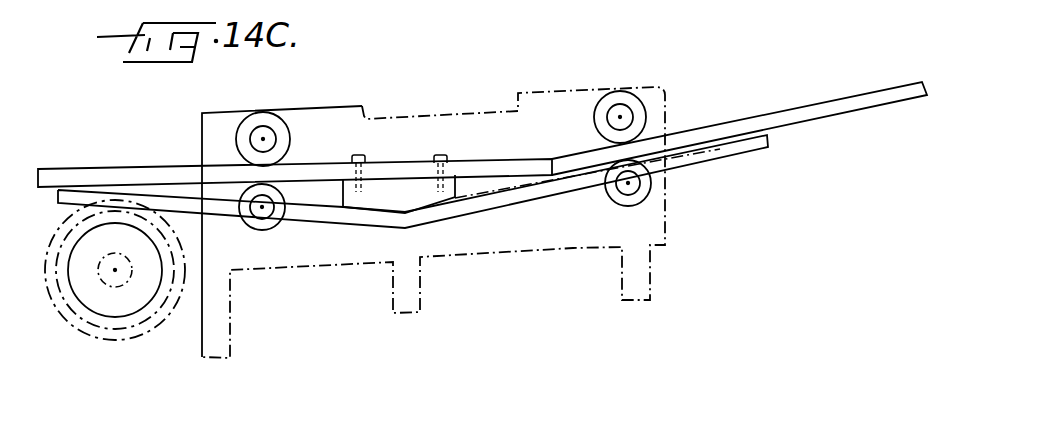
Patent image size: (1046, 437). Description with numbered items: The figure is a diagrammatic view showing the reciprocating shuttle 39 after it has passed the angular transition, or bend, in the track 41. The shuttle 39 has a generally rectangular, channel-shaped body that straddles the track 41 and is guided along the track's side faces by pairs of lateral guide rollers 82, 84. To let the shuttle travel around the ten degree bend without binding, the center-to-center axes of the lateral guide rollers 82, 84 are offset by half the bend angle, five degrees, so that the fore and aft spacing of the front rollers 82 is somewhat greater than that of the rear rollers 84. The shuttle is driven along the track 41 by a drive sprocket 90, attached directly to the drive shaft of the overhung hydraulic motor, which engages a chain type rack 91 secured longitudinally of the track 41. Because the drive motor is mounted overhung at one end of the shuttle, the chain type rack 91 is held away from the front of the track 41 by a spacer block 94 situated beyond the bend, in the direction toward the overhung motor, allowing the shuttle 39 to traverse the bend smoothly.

The reciprocating shuttle 39 is at (447, 120).
The track 41 is at (833, 86).
The lateral guide rollers 82 is at (250, 225).
The lateral guide rollers 84 is at (290, 139).
The drive sprocket 90 is at (98, 326).
The chain type rack 91 is at (721, 155).
The spacer block 94 is at (397, 190).